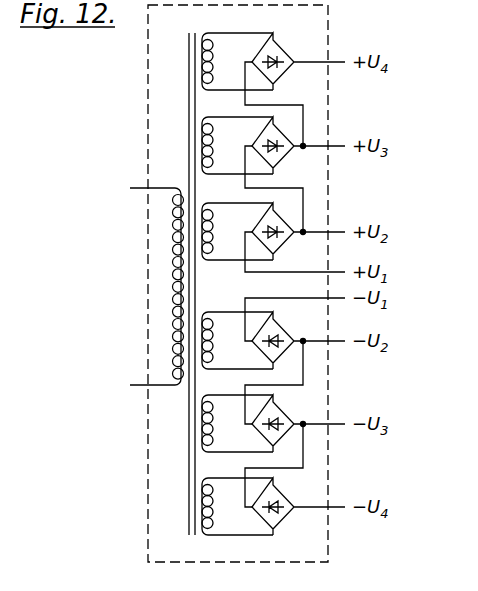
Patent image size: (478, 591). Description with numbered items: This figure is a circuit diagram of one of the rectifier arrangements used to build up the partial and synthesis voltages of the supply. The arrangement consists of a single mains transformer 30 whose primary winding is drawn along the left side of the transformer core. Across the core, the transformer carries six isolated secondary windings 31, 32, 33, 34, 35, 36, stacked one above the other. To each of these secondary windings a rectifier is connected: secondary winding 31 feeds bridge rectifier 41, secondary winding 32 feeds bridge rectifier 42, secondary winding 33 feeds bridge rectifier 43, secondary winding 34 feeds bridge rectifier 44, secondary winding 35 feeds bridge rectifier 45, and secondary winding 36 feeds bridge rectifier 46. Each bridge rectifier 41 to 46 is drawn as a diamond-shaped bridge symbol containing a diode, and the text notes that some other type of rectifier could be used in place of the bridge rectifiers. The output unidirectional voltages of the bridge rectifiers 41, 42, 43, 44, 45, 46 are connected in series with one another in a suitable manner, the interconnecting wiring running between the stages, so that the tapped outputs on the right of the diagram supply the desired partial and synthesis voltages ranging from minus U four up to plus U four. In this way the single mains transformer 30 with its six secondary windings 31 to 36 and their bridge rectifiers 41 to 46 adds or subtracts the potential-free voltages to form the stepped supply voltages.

The mains transformer 30 is at (167, 187).
The secondary winding 31 is at (213, 70).
The secondary winding 32 is at (213, 152).
The secondary winding 33 is at (213, 240).
The secondary winding 34 is at (213, 348).
The secondary winding 35 is at (212, 432).
The secondary winding 36 is at (213, 513).
The bridge rectifier 41 is at (285, 48).
The bridge rectifier 42 is at (282, 130).
The bridge rectifier 43 is at (280, 215).
The bridge rectifier 44 is at (283, 328).
The bridge rectifier 45 is at (297, 408).
The bridge rectifier 46 is at (300, 488).